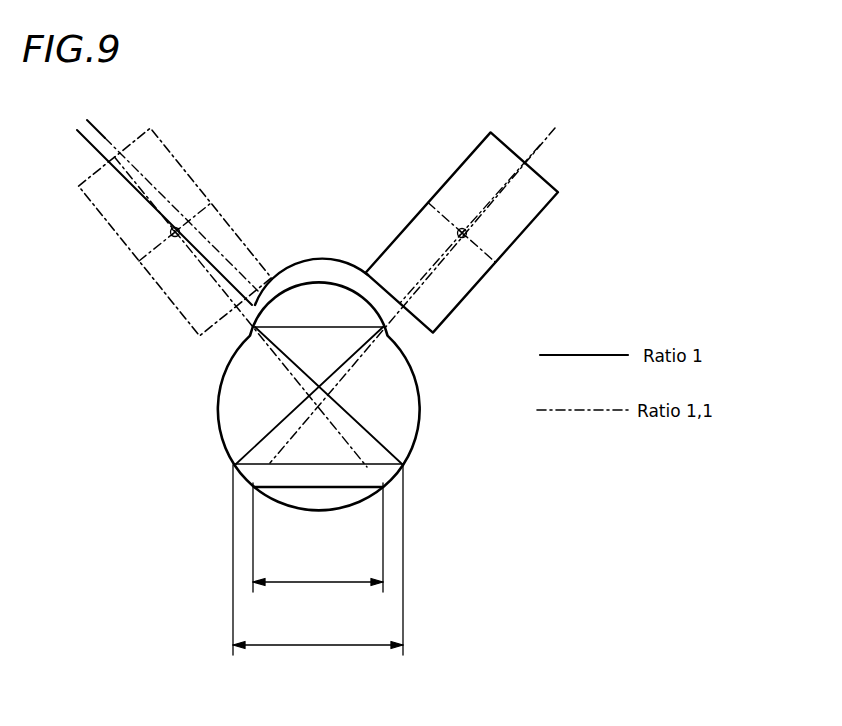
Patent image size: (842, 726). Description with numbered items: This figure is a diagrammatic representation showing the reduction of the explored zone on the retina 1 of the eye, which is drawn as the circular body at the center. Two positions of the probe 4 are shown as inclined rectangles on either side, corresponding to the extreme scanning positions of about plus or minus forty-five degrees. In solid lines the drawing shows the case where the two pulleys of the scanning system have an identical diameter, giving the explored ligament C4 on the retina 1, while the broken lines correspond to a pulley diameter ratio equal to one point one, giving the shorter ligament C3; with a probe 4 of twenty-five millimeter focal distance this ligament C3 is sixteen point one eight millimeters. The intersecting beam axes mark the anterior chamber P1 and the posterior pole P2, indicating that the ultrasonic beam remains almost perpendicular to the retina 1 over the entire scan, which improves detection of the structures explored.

The retina 1 is at (317, 282).
The probe 4 is at (123, 237).
The anterior chamber P1 is at (355, 355).
The posterior pole P2 is at (332, 440).
The ligament C3 is at (318, 537).
The ligament C4 is at (318, 560).